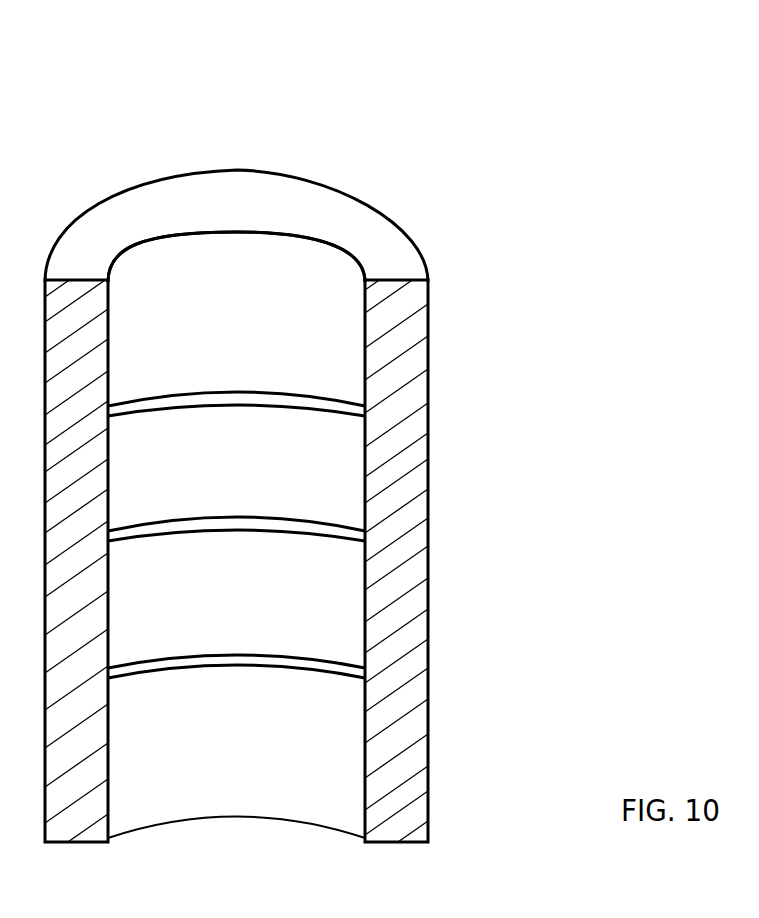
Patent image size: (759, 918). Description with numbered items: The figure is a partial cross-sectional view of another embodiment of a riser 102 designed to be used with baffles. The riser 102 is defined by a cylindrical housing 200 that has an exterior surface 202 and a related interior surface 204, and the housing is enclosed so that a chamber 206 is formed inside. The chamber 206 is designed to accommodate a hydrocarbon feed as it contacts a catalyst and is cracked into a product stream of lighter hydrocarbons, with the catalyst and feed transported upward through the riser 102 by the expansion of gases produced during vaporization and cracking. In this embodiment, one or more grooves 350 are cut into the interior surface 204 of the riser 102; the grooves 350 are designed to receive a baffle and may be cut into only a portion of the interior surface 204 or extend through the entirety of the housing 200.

The riser 102 is at (383, 238).
The cylindrical housing 200 is at (320, 213).
The exterior surface 202 is at (428, 300).
The interior surface 204 is at (207, 257).
The chamber 206 is at (270, 307).
The grooves 350 is at (190, 400).